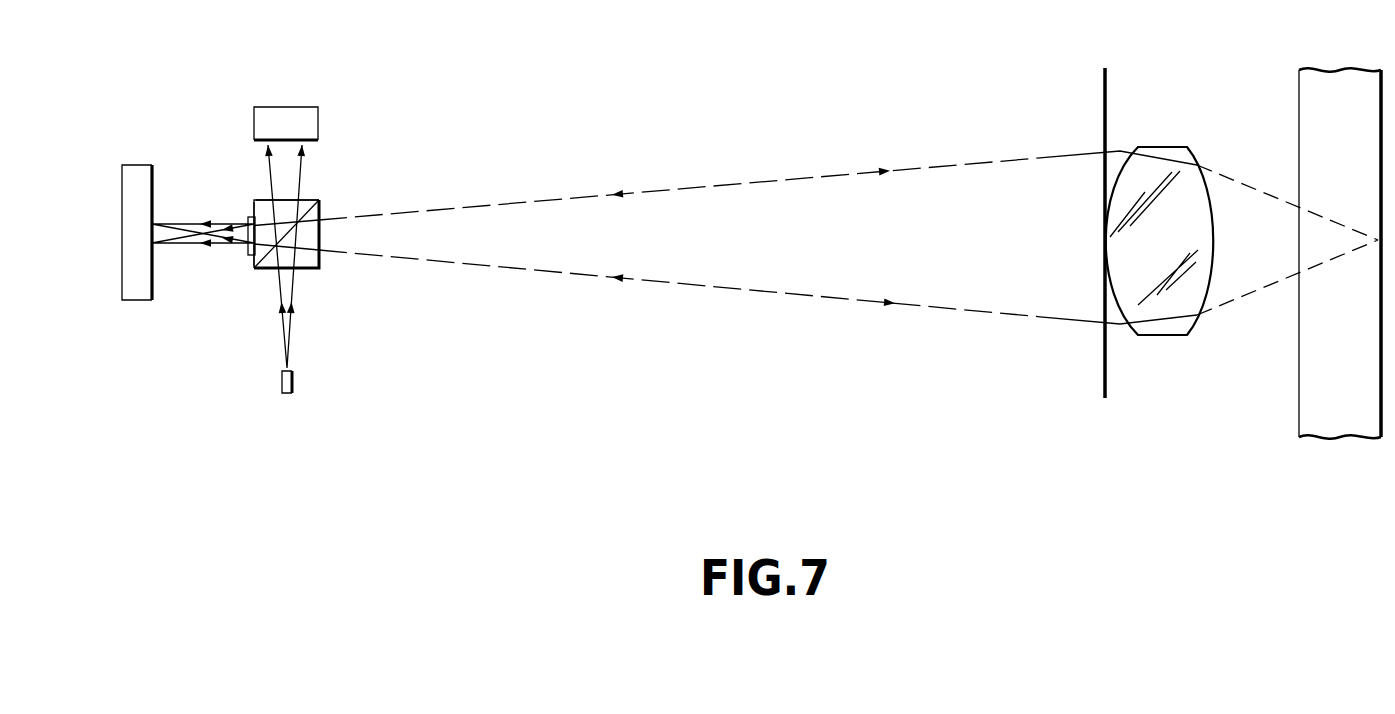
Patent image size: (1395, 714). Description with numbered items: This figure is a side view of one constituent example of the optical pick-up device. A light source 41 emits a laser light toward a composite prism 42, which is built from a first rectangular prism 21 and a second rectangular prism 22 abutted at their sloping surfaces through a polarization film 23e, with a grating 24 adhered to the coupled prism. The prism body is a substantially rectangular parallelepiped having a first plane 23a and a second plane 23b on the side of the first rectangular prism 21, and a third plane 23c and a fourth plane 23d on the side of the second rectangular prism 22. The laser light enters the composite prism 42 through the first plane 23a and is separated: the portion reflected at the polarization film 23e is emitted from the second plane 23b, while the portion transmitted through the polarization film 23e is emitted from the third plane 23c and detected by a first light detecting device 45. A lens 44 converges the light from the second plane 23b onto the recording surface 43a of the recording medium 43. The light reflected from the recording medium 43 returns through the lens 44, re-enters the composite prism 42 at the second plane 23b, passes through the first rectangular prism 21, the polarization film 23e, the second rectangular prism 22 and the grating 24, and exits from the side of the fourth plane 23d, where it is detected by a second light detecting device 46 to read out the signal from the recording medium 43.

The first rectangular prism 21 is at (312, 258).
The second rectangular prism 22 is at (282, 210).
The first plane 23a is at (269, 271).
The second plane 23b is at (320, 216).
The third plane 23c is at (263, 199).
The fourth plane 23d is at (254, 259).
The polarization film 23e is at (306, 199).
The grating 24 is at (248, 217).
The light source 41 is at (294, 384).
The composite prism 42 is at (310, 279).
The recording medium 43 is at (1340, 257).
The recording surface 43a is at (1380, 388).
The lens 44 is at (1157, 177).
The first light detecting device 45 is at (296, 118).
The second light detecting device 46 is at (139, 301).